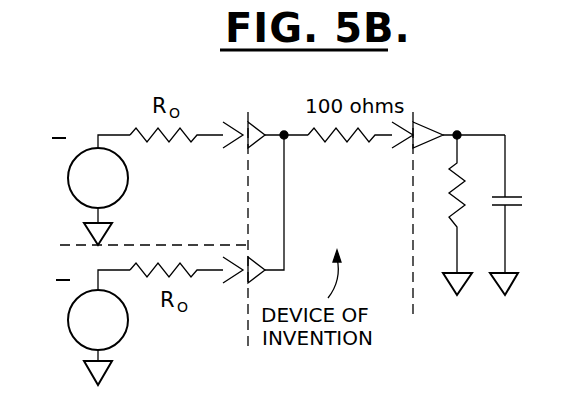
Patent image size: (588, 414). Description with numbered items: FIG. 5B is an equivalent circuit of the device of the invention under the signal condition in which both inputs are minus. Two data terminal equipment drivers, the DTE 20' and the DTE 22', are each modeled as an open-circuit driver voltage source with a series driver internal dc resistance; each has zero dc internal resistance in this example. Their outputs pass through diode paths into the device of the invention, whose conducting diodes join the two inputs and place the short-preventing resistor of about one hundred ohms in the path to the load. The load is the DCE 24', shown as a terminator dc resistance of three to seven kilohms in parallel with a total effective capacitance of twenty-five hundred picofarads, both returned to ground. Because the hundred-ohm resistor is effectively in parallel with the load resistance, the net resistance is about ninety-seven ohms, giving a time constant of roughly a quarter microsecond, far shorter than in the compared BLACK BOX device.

The DTE 20' is at (86, 190).
The DTE 22' is at (86, 327).
The DCE 24' is at (482, 226).